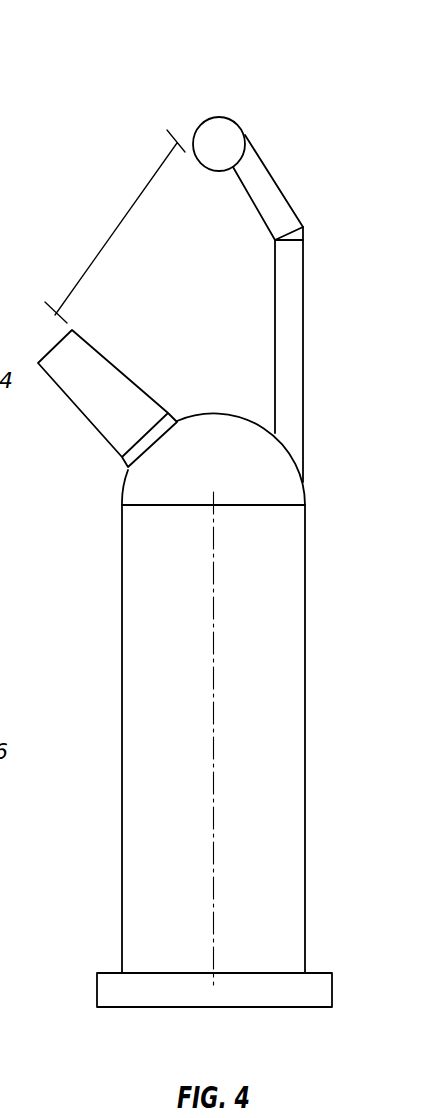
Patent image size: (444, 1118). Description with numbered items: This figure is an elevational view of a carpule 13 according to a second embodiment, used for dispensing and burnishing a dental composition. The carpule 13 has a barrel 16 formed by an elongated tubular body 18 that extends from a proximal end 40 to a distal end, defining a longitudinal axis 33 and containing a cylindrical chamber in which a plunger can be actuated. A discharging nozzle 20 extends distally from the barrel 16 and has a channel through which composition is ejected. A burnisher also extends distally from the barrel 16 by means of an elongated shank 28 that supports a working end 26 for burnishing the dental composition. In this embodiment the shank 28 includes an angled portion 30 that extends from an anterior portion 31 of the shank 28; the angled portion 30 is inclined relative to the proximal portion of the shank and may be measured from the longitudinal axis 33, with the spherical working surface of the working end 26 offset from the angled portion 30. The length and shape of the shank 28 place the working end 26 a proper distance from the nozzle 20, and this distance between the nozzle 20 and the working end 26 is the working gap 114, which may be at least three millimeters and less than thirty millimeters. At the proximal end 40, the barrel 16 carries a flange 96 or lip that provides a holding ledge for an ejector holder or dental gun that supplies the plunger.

The carpule 13 is at (75, 118).
The barrel 16 is at (305, 693).
The tubular body 18 is at (130, 902).
The discharging nozzle 20 is at (77, 407).
The working end 26 is at (213, 117).
The shank 28 is at (338, 268).
The angled portion 30 is at (273, 182).
The anterior portion 31 is at (302, 423).
The longitudinal axis 33 is at (214, 817).
The proximal end 40 is at (118, 1007).
The flange 96 is at (332, 994).
The working gap 114 is at (113, 233).